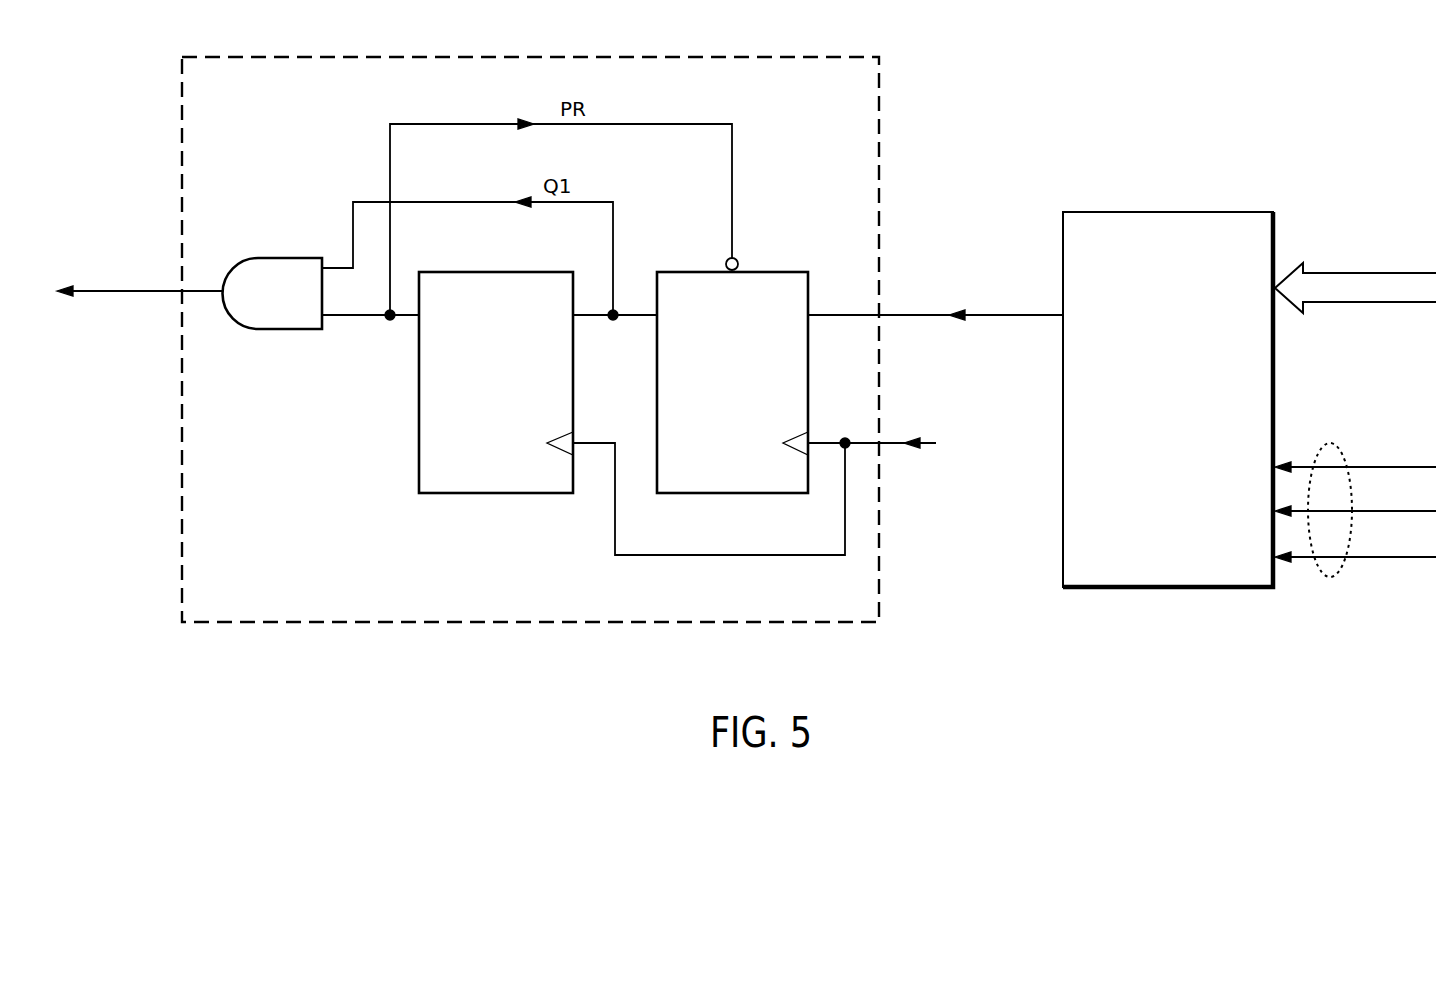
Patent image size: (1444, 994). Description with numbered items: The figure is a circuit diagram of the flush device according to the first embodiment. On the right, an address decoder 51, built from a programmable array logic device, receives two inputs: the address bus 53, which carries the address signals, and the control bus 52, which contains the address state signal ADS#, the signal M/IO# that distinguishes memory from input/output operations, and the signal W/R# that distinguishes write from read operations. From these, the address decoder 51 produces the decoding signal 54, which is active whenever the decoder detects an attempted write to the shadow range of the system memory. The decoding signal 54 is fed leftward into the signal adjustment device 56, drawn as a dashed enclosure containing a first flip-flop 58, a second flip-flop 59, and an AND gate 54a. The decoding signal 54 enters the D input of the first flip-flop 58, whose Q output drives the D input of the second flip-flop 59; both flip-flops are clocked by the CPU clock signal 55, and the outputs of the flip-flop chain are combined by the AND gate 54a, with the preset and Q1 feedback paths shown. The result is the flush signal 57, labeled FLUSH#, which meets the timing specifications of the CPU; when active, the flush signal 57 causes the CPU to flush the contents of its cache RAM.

The address decoder 51 is at (1168, 212).
The control bus 52 is at (1330, 578).
The address bus 53 is at (1353, 273).
The decoding signal 54 is at (913, 314).
The AND gate 54a is at (265, 257).
The CPU clock signal 55 is at (978, 460).
The signal adjustment device 56 is at (659, 50).
The flush signal 57 is at (123, 296).
The first flip-flop 58 is at (768, 272).
The second flip-flop 59 is at (500, 494).